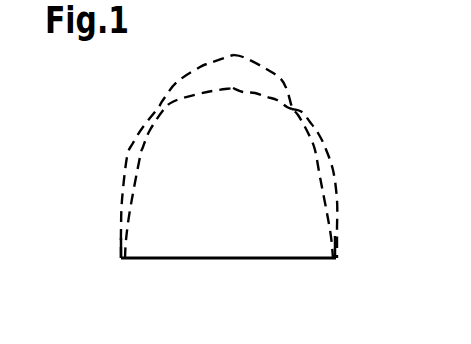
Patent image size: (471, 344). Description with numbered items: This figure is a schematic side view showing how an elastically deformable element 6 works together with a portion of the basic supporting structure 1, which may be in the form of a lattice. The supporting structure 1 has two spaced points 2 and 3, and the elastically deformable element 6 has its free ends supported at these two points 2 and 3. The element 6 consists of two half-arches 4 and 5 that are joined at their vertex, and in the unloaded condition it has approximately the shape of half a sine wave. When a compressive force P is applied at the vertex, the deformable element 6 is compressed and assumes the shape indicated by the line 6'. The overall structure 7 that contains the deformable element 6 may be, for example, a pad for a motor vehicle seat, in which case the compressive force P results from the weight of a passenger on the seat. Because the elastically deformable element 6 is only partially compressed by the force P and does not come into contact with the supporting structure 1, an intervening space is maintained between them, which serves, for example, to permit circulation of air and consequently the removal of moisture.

The supporting structure 1 is at (223, 259).
The spaced point 2 is at (131, 259).
The spaced point 3 is at (335, 259).
The half-arch 4 is at (170, 87).
The half-arch 5 is at (296, 93).
The elastically deformable element 6 is at (290, 150).
The line showing compressed shape of deformable element 6' is at (352, 183).
The overall structure 7 is at (123, 152).
The compressive force P is at (233, 88).